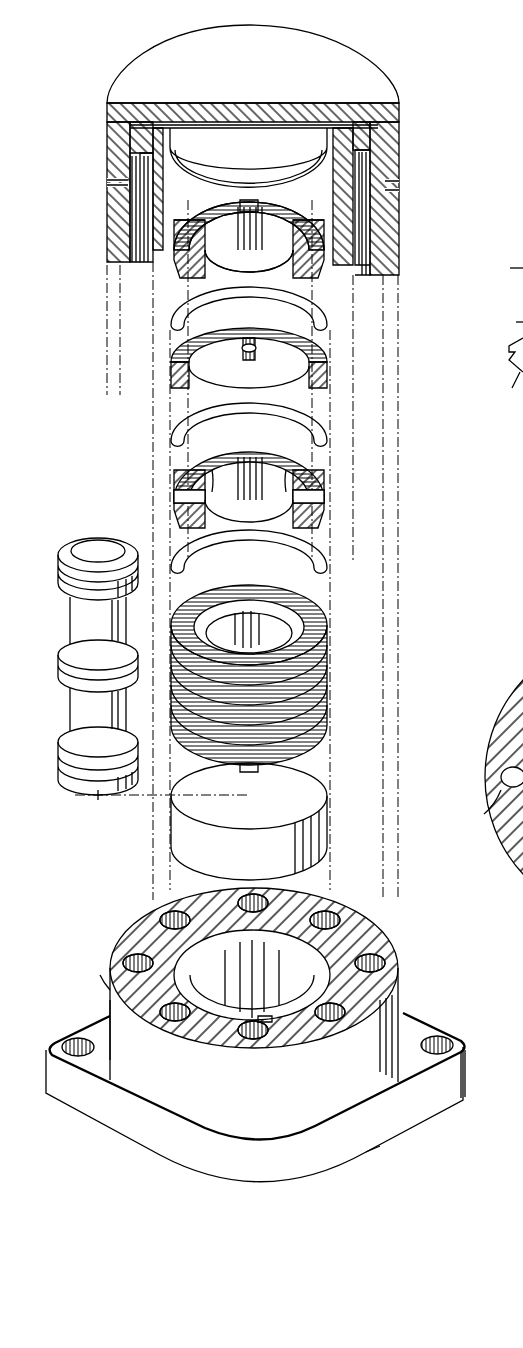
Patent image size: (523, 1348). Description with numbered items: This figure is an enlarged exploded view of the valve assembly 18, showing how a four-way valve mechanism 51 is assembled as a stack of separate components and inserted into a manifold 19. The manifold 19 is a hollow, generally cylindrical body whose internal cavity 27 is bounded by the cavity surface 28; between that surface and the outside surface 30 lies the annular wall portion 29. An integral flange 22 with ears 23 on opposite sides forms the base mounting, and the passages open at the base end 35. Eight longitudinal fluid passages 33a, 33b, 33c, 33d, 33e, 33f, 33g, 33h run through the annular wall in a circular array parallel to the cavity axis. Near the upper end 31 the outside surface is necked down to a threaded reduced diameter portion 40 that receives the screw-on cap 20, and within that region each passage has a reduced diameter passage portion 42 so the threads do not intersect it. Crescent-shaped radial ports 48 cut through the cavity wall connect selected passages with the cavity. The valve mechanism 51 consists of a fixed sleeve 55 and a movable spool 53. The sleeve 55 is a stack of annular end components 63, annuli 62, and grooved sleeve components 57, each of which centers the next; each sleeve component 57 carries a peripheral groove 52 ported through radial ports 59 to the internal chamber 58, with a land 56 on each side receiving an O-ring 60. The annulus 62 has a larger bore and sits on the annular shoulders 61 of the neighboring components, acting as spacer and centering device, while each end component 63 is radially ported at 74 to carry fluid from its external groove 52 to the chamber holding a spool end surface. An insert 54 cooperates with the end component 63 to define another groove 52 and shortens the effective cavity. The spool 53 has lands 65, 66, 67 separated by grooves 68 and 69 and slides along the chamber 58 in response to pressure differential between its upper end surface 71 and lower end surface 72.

The valve assembly 18 is at (78, 38).
The manifold 19 is at (400, 262).
The cap 20 is at (300, 32).
The flange 22 is at (210, 1160).
The ears 23 is at (460, 1078).
The internal cavity 27 is at (206, 894).
The cavity surface 28 is at (312, 960).
The annular wall portion 29 is at (170, 1018).
The outside surface 30 is at (400, 1010).
The upper end 31 is at (338, 124).
The fluid passage 33a is at (253, 1040).
The fluid passage 33b is at (175, 1022).
The fluid passage 33c is at (122, 962).
The fluid passage 33d is at (172, 914).
The fluid passage 33e is at (253, 897).
The fluid passage 33f is at (332, 914).
The fluid passage 33g is at (388, 963).
The fluid passage 33h is at (330, 1022).
The base end 35 is at (400, 1135).
The reduced diameter portion 40 is at (373, 152).
The reduced diameter passage portion 42 is at (380, 175).
The radial port 48 is at (278, 1024).
The valve mechanism 51 is at (110, 480).
The peripheral groove 52 is at (195, 222).
The spool 53 is at (79, 543).
The insert 54 is at (248, 504).
The sleeve 55 is at (257, 553).
The land 56 is at (330, 492).
The sleeve component 57 is at (220, 522).
The internal chamber 58 is at (272, 245).
The radial port 59 is at (248, 352).
The O-ring 60 is at (248, 300).
The annular shoulder 61 is at (312, 268).
The annulus 62 is at (180, 350).
The end component 63 is at (197, 270).
The land 65 is at (58, 576).
The land 66 is at (60, 661).
The land 67 is at (58, 746).
The groove 68 is at (70, 618).
The groove 69 is at (72, 701).
The upper end surface 71 is at (98, 548).
The lower end surface 72 is at (96, 795).
The radial port 74 is at (262, 204).